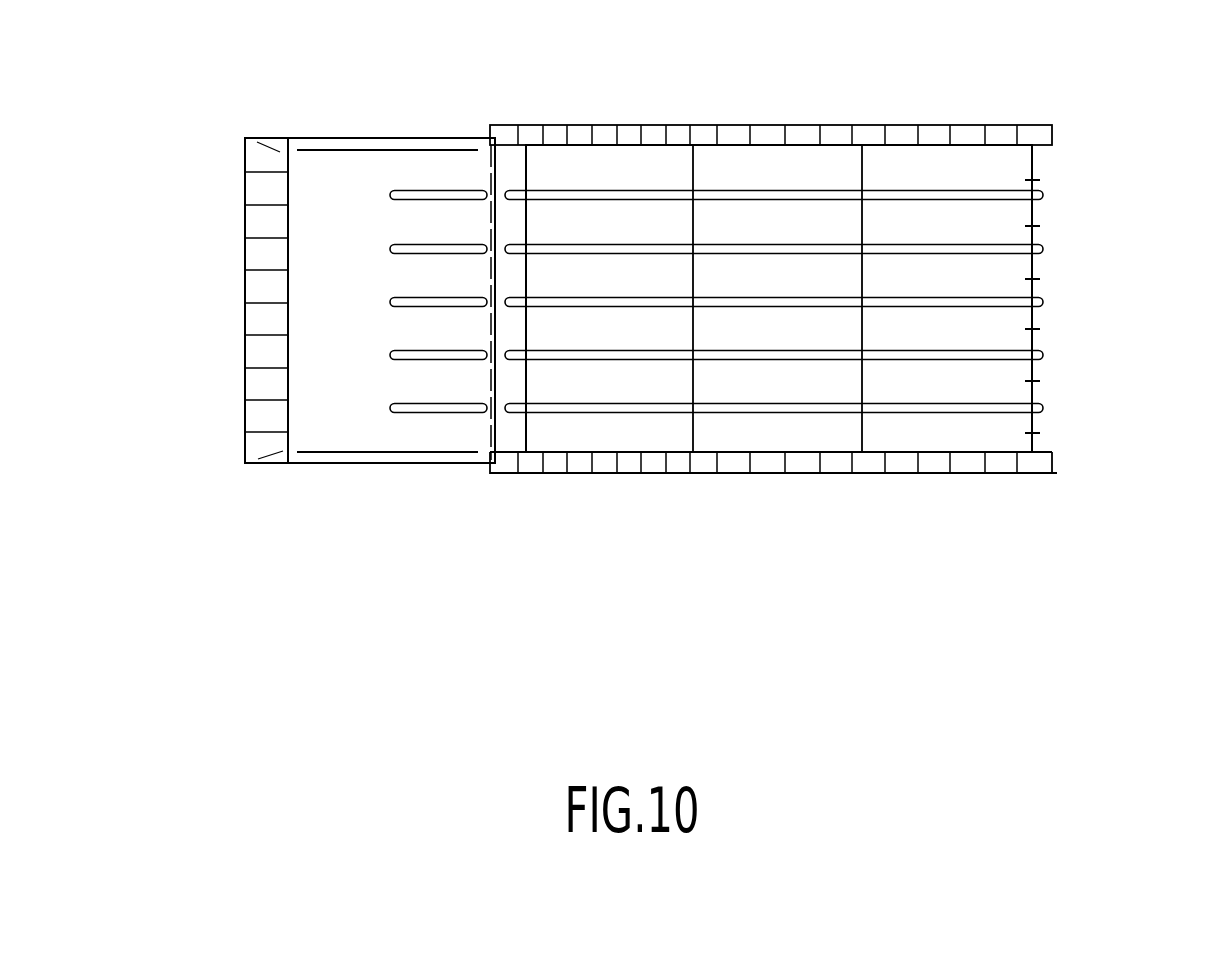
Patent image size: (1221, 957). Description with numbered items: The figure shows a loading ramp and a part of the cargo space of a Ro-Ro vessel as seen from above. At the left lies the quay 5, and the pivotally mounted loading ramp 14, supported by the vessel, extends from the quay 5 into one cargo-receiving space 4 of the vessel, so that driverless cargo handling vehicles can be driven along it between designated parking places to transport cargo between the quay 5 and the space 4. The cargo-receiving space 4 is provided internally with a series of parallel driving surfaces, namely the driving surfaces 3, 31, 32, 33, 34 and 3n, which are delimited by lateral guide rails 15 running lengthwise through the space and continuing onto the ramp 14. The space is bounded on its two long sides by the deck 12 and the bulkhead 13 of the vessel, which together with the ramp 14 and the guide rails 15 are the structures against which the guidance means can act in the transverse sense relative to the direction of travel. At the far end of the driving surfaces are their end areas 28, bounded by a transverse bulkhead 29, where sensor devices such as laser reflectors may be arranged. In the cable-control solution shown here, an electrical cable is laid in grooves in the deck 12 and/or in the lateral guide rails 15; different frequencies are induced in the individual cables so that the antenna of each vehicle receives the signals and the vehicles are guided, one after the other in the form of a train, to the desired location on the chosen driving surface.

The cargo-receiving space 4 is at (613, 162).
The quay 5 is at (233, 300).
The deck 12 is at (770, 440).
The bulkhead 13 is at (890, 452).
The loading ramp 14 is at (355, 445).
The lateral guide rails 15 is at (440, 406).
The end areas of the driving surfaces 28 is at (1040, 160).
The transverse bulkhead 29 is at (1035, 172).
The driving surface 3 is at (1025, 180).
The driving surface 31 is at (1025, 226).
The driving surface 32 is at (1025, 279).
The driving surface 33 is at (1025, 329).
The driving surface 34 is at (1025, 381).
The driving surface 3n is at (1025, 433).